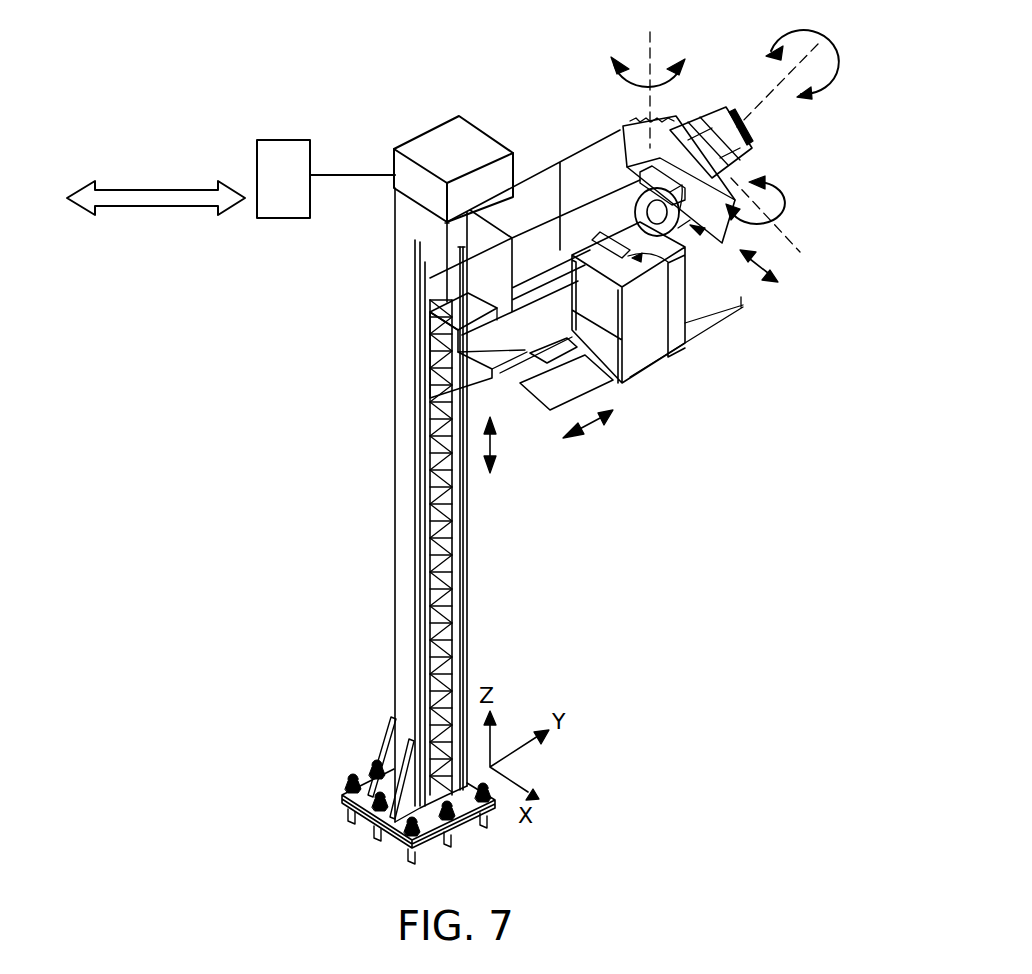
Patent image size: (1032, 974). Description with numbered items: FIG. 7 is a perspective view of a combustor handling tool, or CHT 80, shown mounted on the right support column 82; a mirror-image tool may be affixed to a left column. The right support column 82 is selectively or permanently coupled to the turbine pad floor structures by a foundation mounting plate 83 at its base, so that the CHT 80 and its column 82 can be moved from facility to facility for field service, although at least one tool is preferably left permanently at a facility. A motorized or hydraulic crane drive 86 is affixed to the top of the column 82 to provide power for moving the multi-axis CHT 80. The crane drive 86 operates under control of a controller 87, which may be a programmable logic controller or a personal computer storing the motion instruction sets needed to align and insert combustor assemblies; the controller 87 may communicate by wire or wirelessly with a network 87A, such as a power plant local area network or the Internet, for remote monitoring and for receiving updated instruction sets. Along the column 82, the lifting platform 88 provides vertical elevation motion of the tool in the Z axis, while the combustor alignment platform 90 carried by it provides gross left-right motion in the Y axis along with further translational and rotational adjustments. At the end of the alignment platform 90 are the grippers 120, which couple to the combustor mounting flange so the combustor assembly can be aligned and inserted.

The combustor handling tool 80 is at (212, 589).
The right support column 82 is at (395, 533).
The foundation mounting plate 83 is at (372, 775).
The crane drive 86 is at (397, 162).
The controller 87 is at (273, 172).
The network 87A is at (84, 200).
The lifting platform 88 is at (433, 358).
The combustor alignment platform 90 is at (690, 228).
The grippers 120 is at (752, 138).